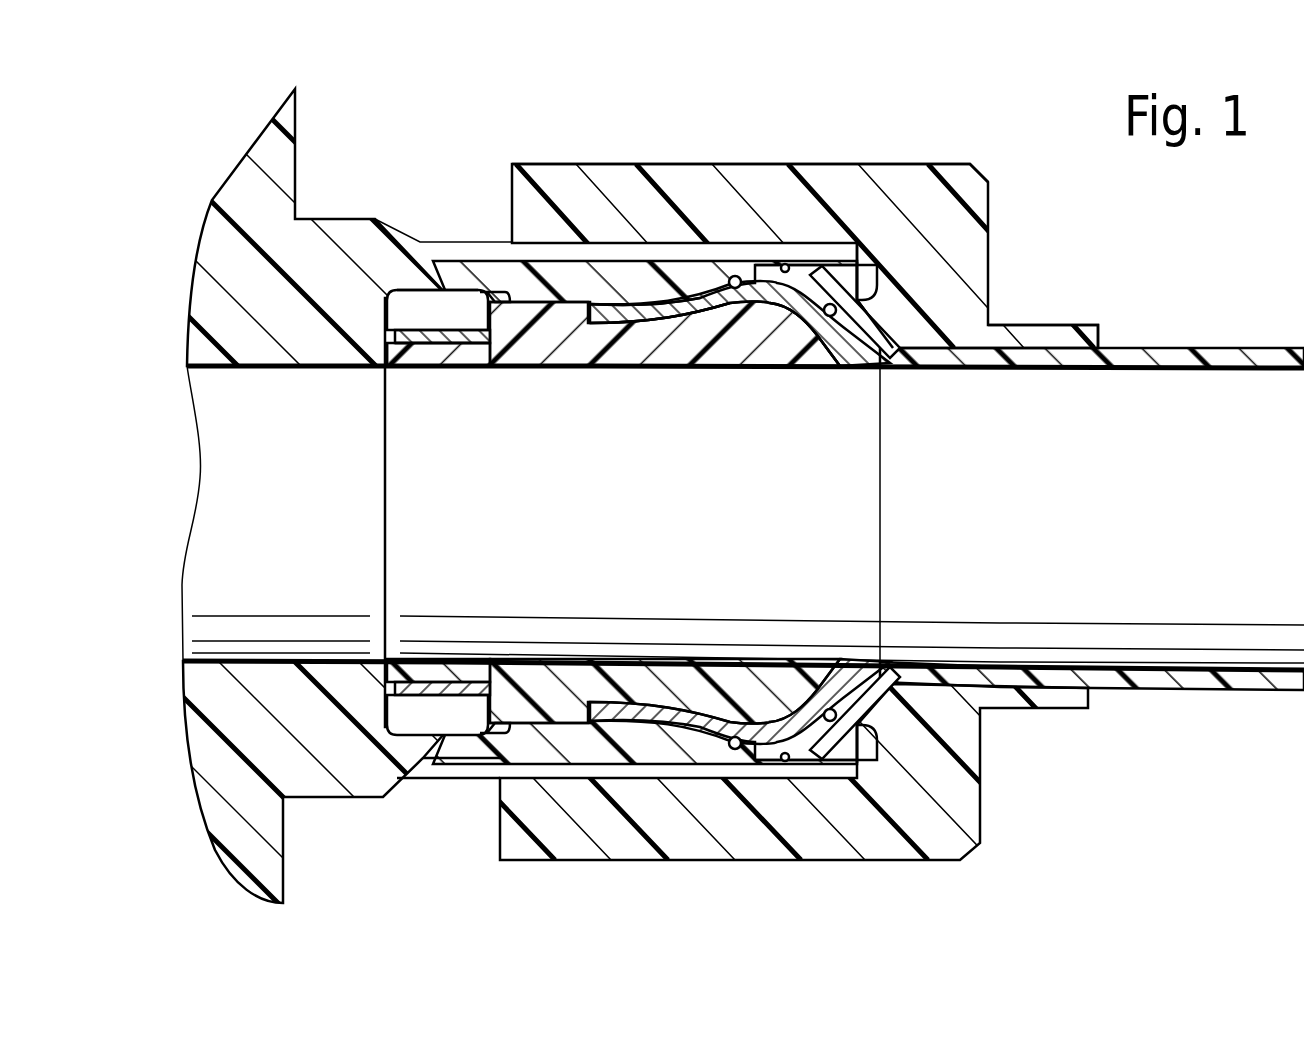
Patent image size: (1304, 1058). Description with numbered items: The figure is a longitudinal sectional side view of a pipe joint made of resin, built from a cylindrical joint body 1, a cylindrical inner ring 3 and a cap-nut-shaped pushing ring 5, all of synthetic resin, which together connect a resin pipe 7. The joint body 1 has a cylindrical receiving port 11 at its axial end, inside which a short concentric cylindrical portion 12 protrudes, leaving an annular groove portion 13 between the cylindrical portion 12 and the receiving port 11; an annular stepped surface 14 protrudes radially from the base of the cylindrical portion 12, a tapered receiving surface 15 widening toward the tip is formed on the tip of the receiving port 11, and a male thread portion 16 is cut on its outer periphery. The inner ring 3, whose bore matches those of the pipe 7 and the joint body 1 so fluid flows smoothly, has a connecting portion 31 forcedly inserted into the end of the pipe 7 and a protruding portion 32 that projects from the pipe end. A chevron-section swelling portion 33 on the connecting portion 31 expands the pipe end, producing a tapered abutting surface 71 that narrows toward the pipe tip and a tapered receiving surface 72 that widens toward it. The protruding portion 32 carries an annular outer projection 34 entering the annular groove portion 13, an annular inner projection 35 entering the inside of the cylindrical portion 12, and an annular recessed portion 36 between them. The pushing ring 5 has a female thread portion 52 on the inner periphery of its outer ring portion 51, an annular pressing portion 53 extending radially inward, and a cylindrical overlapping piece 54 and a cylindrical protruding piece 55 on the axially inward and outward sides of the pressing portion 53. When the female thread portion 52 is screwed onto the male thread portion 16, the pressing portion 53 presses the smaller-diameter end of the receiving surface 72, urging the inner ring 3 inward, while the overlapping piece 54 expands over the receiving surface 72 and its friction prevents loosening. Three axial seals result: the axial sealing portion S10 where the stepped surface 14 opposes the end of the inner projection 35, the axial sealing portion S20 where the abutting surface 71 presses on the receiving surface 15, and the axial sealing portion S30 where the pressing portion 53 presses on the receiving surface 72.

The joint body 1 is at (240, 177).
The inner ring 3 is at (385, 594).
The pushing ring 5 is at (955, 164).
The pipe 7 is at (1268, 350).
The receiving port 11 is at (625, 280).
The cylindrical portion 12 is at (428, 372).
The annular groove portion 13 is at (390, 330).
The annular stepped surface 14 is at (430, 338).
The receiving surface 15 is at (690, 345).
The male thread portion 16 is at (728, 250).
The connecting portion 31 is at (635, 348).
The protruding portion 32 is at (550, 348).
The swelling portion 33 is at (770, 345).
The annular outer projection 34 is at (420, 302).
The annular inner projection 35 is at (415, 350).
The annular recessed portion 36 is at (478, 346).
The outer ring portion 51 is at (547, 178).
The female thread portion 52 is at (785, 262).
The annular pressing portion 53 is at (878, 348).
The cylindrical overlapping piece 54 is at (875, 262).
The cylindrical protruding piece 55 is at (1060, 335).
The tapered abutting surface 71 is at (735, 305).
The tapered receiving surface 72 is at (836, 318).
The axial sealing portion S10 is at (378, 342).
The axial sealing portion S20 is at (708, 288).
The axial sealing portion S30 is at (872, 320).